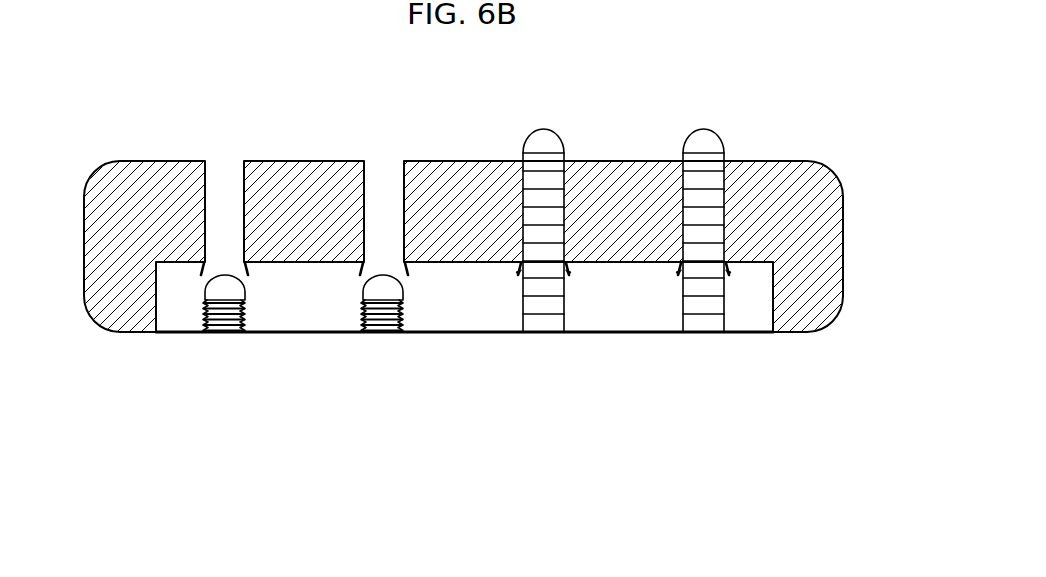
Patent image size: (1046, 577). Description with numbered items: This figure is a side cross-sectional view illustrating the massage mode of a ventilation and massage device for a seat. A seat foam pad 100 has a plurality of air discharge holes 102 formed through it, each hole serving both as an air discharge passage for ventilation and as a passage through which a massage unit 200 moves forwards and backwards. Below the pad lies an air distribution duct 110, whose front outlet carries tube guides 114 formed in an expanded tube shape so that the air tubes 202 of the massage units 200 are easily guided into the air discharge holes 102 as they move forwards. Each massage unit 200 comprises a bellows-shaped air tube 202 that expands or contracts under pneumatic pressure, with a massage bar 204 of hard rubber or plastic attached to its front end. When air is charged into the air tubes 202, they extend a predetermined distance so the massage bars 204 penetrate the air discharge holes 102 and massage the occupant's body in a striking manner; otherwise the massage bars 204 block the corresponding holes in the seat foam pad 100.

The seat foam pad 100 is at (321, 177).
The air discharge hole 102 is at (229, 178).
The air distribution duct 110 is at (453, 305).
The tube guide 114 is at (571, 271).
The massage unit 200 is at (285, 337).
The air tube 202 is at (363, 320).
The massage bar 204 is at (367, 285).